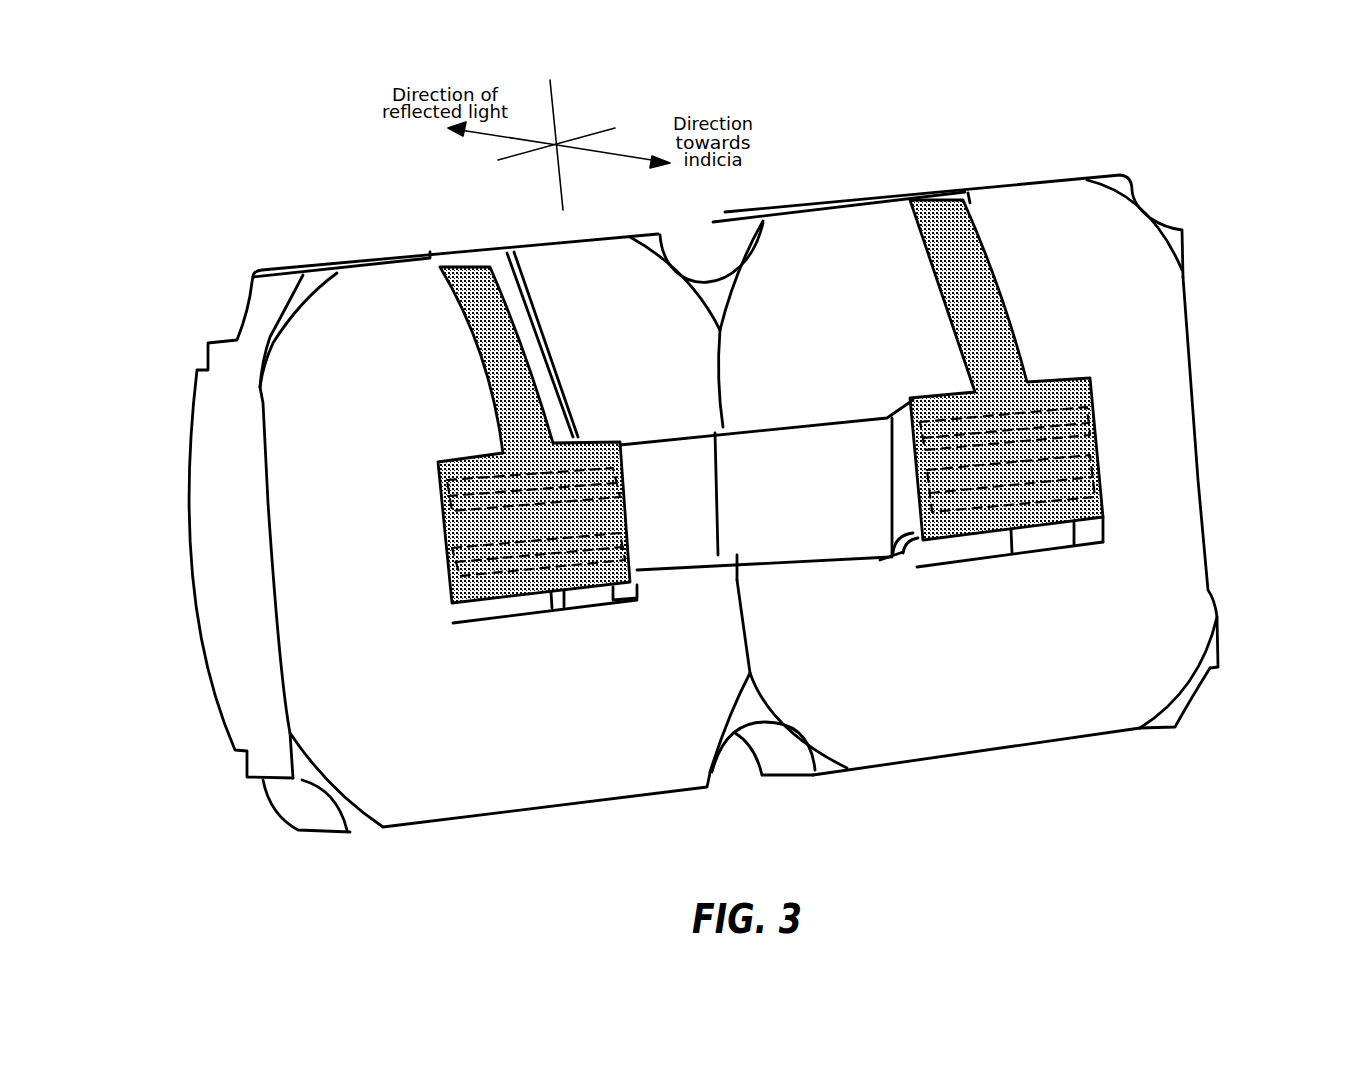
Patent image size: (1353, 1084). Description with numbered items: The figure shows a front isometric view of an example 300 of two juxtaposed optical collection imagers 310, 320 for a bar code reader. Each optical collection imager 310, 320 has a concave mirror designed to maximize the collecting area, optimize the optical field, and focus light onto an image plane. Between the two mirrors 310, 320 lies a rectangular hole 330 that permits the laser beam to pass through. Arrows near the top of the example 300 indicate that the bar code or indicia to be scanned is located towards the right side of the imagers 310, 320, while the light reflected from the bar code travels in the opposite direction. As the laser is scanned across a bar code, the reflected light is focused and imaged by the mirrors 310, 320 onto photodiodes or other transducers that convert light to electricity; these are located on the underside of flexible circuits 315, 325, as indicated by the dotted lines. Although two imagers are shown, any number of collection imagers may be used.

The example of two juxtaposed optical collection imagers 300 is at (238, 74).
The optical collection imager 310 is at (313, 415).
The flexible circuit 315 is at (440, 465).
The optical collection imager 320 is at (1125, 342).
The flexible circuit 325 is at (1083, 387).
The rectangular hole 330 is at (673, 527).